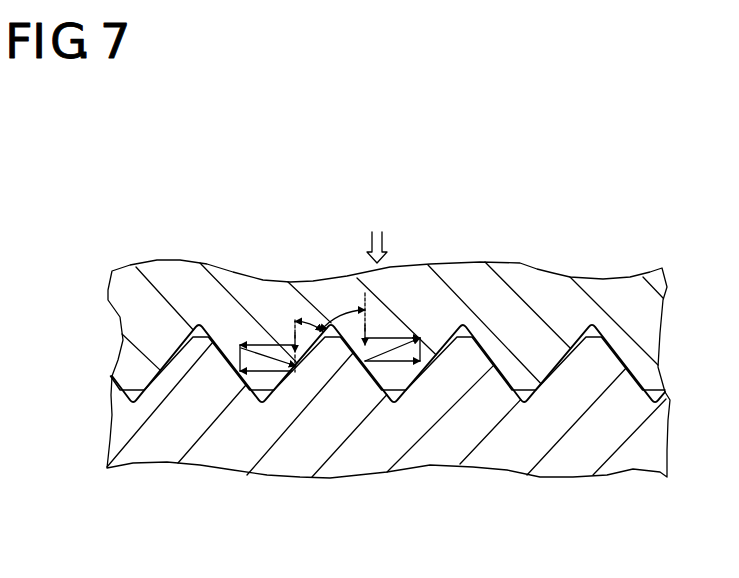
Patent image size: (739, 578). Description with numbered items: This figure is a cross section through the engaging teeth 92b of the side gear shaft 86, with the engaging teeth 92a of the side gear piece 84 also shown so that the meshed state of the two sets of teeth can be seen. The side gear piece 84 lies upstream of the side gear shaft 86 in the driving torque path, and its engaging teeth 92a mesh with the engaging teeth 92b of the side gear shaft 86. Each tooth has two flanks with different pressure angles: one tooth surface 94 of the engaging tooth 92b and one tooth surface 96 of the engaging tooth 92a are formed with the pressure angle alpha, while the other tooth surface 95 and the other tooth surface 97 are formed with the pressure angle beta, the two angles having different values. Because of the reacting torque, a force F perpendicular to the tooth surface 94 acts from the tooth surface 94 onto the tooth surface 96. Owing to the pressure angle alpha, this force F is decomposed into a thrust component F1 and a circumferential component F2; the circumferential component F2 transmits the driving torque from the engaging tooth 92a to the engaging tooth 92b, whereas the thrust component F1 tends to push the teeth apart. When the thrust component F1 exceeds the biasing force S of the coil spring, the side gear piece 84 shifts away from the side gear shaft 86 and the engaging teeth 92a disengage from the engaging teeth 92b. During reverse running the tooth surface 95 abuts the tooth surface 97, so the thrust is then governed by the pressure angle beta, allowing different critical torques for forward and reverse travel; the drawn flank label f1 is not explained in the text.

The side gear piece 84 is at (128, 290).
The side gear shaft 86 is at (137, 450).
The engaging teeth 92a is at (523, 365).
The engaging teeth 92b is at (597, 368).
The tooth surface 94 is at (425, 392).
The tooth surface 95 is at (297, 357).
The tooth surface 96 is at (366, 358).
The tooth surface 97 is at (319, 330).
The flank face f1 is at (328, 343).
The force F is at (395, 348).
The thrust component F1 is at (372, 368).
The circumferential component F2 is at (420, 366).
The biasing force S is at (377, 233).